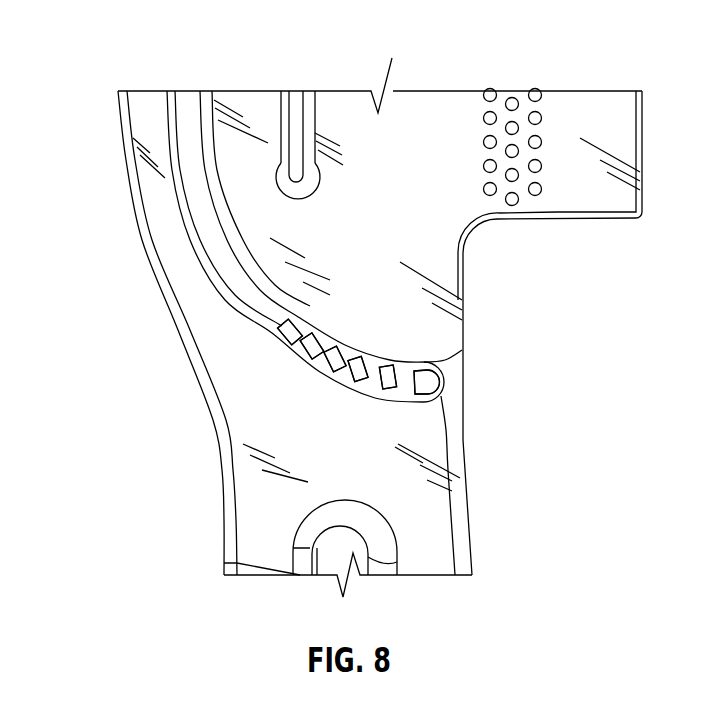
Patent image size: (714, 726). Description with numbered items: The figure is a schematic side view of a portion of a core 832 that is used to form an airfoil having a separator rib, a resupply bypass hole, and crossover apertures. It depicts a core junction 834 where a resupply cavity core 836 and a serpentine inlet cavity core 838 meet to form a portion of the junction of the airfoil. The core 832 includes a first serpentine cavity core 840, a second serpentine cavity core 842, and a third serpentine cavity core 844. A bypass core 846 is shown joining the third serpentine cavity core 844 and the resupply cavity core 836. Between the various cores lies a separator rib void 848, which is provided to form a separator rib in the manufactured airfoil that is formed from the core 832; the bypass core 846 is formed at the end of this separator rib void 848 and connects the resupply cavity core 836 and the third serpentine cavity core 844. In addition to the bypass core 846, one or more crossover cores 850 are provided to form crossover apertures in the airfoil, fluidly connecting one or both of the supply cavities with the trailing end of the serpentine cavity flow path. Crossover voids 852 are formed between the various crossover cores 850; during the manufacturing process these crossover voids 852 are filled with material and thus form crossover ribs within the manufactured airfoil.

The core 832 is at (125, 117).
The core junction 834 is at (480, 348).
The resupply cavity core 836 is at (460, 557).
The serpentine inlet cavity core 838 is at (253, 538).
The first serpentine cavity core 840 is at (215, 340).
The second serpentine cavity core 842 is at (257, 112).
The third serpentine cavity core 844 is at (442, 123).
The bypass core 846 is at (450, 383).
The separator rib void 848 is at (188, 108).
The crossover cores 850 is at (416, 370).
The crossover voids 852 is at (303, 362).